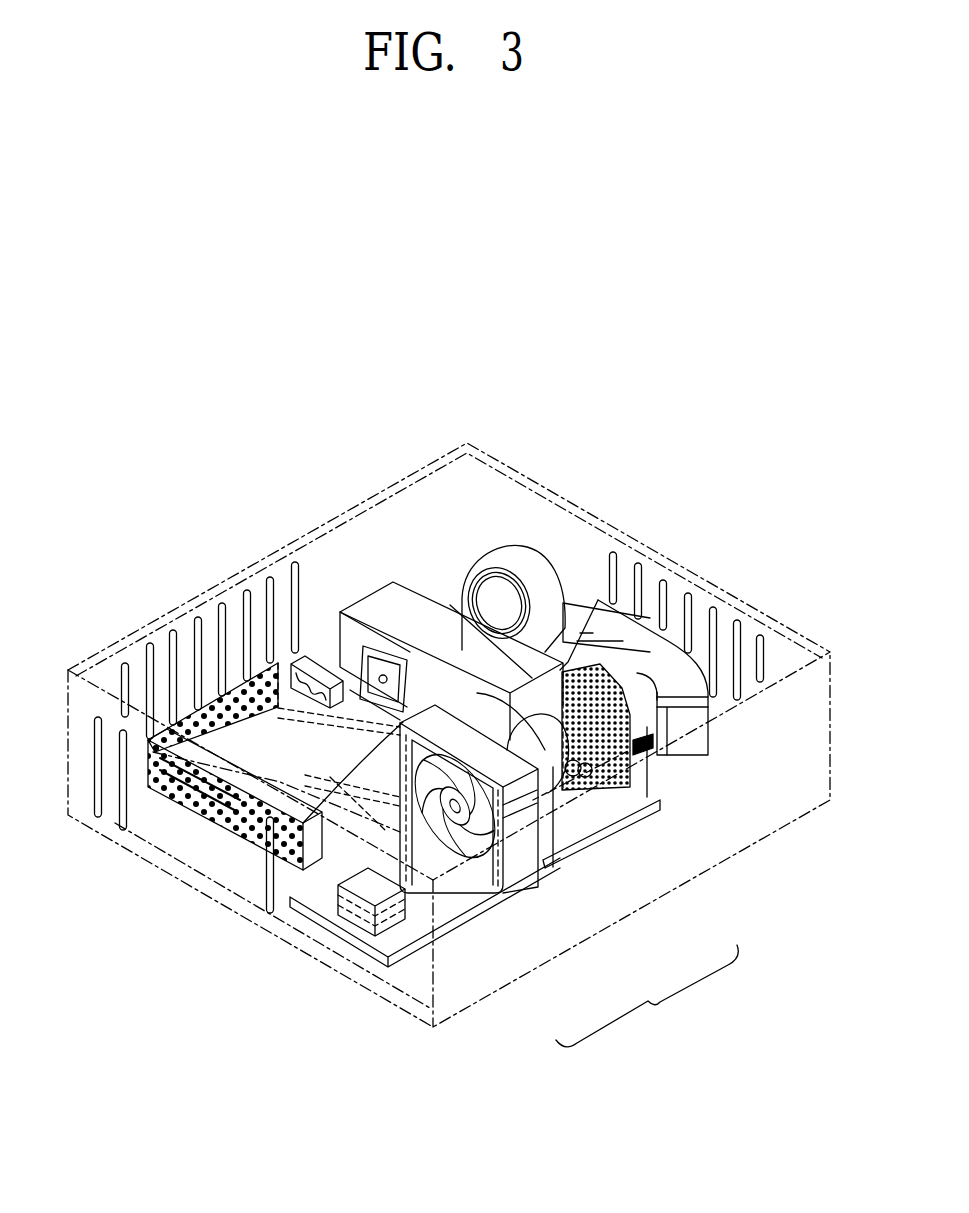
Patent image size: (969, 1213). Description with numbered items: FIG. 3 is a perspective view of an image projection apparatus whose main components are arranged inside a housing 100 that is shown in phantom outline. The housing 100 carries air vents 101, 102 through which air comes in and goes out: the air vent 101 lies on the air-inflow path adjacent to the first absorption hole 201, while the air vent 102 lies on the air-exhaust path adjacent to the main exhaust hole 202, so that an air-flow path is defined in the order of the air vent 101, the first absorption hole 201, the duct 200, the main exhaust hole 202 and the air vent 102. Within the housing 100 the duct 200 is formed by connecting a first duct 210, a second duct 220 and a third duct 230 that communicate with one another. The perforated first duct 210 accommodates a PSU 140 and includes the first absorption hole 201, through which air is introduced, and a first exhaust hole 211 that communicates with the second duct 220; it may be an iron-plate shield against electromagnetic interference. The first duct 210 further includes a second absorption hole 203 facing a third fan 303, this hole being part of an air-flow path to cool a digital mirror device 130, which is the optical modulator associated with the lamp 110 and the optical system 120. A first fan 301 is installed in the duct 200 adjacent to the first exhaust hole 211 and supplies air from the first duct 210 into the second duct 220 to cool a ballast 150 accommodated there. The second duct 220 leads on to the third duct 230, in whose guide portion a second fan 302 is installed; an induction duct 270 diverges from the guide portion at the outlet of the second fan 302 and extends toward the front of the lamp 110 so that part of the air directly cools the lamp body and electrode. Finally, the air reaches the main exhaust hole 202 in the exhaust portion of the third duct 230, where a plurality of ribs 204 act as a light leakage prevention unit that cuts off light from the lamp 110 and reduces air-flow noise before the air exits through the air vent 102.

The housing 100 is at (376, 492).
The air vent 101 is at (125, 663).
The air vent 102 is at (758, 640).
The lamp 110 is at (566, 650).
The optical system 120 is at (415, 600).
The digital mirror device (DMD) 130 is at (336, 640).
The PSU 140 is at (163, 790).
The ballast 150 is at (343, 873).
The duct 200 is at (492, 855).
The first absorption hole 201 is at (148, 757).
The main exhaust hole 202 is at (650, 643).
The second absorption hole 203 is at (290, 684).
The ribs 204 is at (583, 649).
The first duct 210 is at (405, 893).
The first exhaust hole 211 is at (268, 835).
The second duct 220 is at (422, 870).
The third duct 230 is at (540, 873).
The induction duct 270 is at (497, 720).
The first fan 301 is at (338, 850).
The second fan 302 is at (530, 862).
The third fan 303 is at (327, 688).